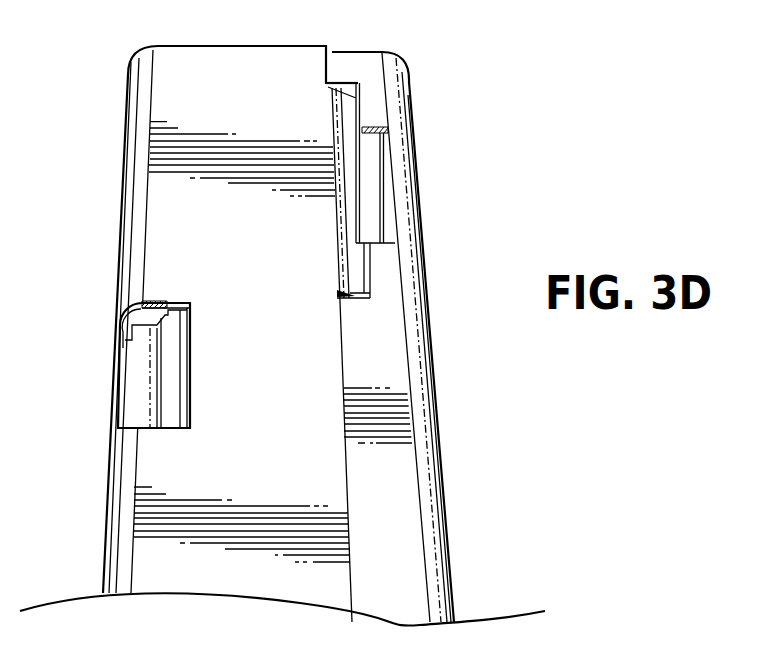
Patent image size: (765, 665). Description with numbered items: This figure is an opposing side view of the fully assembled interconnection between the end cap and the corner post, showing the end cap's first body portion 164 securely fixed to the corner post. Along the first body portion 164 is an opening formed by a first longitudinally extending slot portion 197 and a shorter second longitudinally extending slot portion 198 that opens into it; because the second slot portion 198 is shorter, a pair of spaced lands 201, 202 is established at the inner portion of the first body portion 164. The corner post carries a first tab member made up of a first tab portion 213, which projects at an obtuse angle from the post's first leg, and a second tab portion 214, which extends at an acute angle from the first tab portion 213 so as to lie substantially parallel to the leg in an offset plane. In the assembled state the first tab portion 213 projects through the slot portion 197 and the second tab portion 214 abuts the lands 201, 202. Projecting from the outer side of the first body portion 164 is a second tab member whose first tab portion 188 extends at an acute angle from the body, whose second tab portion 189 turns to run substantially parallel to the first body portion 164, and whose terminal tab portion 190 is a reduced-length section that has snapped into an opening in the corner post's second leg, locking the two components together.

The first body portion 164 is at (259, 249).
The first tab portion 188 is at (170, 367).
The second tab portion 189 is at (143, 382).
The terminal tab portion 190 is at (123, 407).
The first longitudinally extending slot portion 197 is at (353, 74).
The second longitudinally extending slot portion 198 is at (384, 143).
The land 201 is at (373, 112).
The land 202 is at (385, 260).
The first tab portion 213 is at (352, 198).
The second tab portion 214 is at (368, 160).